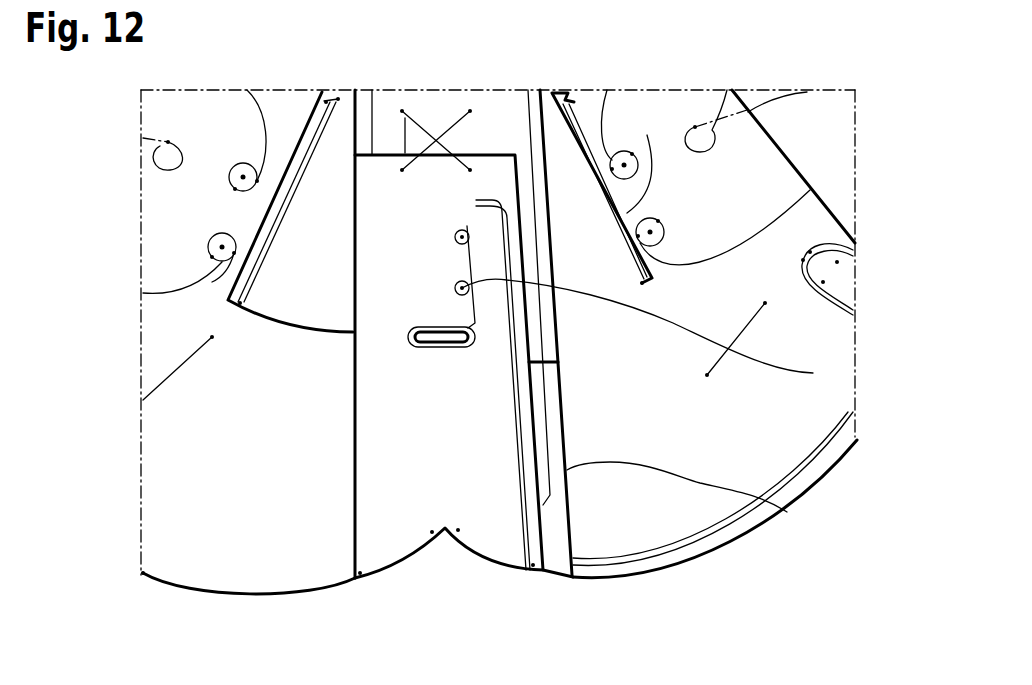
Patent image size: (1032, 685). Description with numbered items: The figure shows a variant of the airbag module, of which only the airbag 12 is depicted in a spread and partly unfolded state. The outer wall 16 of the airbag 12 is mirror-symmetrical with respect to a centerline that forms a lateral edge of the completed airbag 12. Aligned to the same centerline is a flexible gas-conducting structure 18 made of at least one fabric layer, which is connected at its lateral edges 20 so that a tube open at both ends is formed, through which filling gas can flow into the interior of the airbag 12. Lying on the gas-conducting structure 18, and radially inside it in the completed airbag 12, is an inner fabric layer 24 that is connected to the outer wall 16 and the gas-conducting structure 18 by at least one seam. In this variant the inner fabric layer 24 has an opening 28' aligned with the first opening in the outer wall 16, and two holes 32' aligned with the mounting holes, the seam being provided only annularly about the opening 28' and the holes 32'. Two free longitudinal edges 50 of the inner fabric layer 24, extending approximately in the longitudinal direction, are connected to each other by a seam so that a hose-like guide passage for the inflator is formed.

The airbag 12 is at (157, 305).
The outer wall 16 is at (162, 343).
The flexible gas-conducting structure 18 is at (300, 198).
The lateral edges 20 is at (240, 214).
The inner fabric layer 24 is at (377, 468).
The opening 28' is at (275, 375).
The holes 32' is at (692, 301).
The free longitudinal edges 50 is at (375, 425).